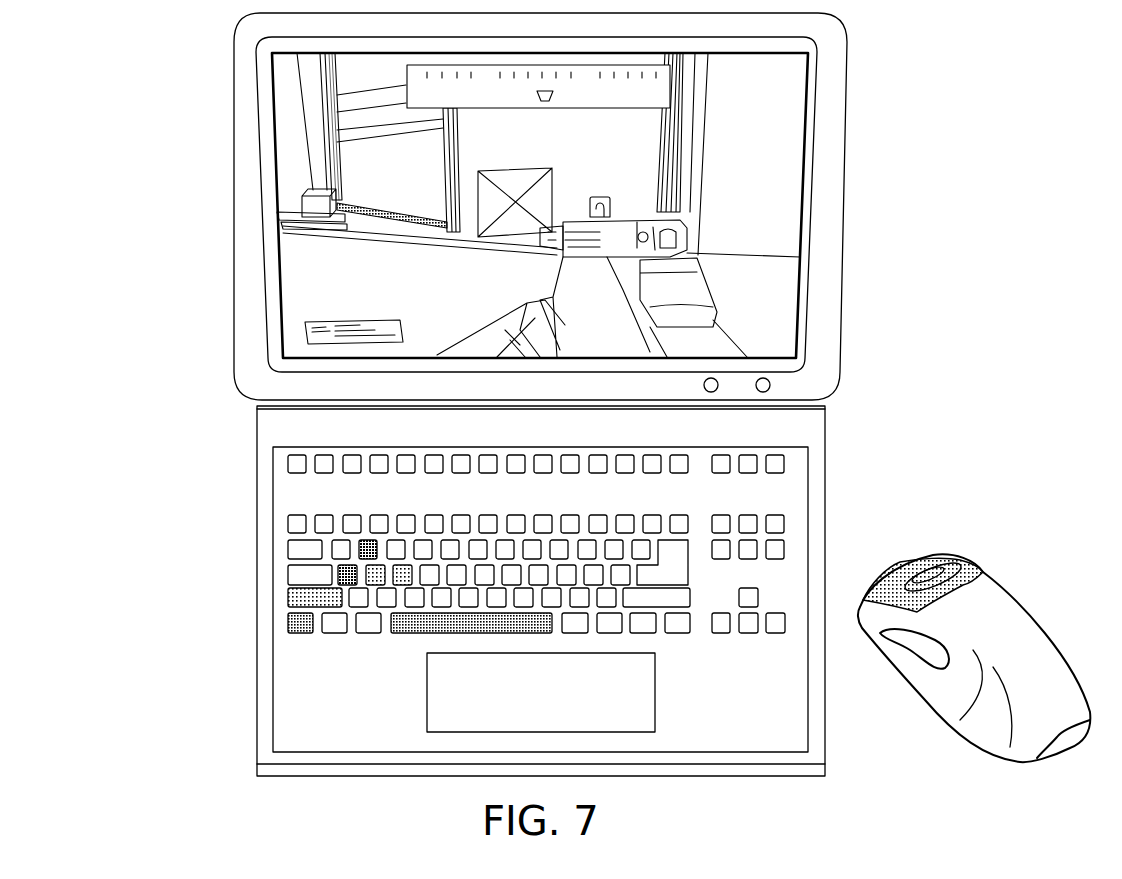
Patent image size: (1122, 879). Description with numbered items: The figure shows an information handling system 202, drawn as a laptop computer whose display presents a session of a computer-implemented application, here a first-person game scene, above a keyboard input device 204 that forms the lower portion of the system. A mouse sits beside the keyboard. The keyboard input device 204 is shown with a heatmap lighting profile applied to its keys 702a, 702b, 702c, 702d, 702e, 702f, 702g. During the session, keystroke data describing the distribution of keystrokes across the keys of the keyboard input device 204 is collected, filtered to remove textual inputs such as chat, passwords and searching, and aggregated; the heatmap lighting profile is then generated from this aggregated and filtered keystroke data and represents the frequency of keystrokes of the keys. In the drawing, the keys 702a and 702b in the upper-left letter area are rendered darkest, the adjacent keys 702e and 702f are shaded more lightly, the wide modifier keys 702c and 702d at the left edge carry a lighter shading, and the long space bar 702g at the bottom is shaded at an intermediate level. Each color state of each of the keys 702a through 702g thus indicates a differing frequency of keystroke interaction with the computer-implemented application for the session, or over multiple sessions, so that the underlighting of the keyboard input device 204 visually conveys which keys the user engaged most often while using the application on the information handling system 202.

The information handling system 202 is at (100, 74).
The keyboard input device 204 is at (257, 684).
The key 702a is at (358, 541).
The key 702b is at (337, 578).
The key 702c is at (288, 598).
The key 702d is at (288, 626).
The key 702e is at (375, 586).
The key 702f is at (408, 564).
The key 702g is at (472, 634).